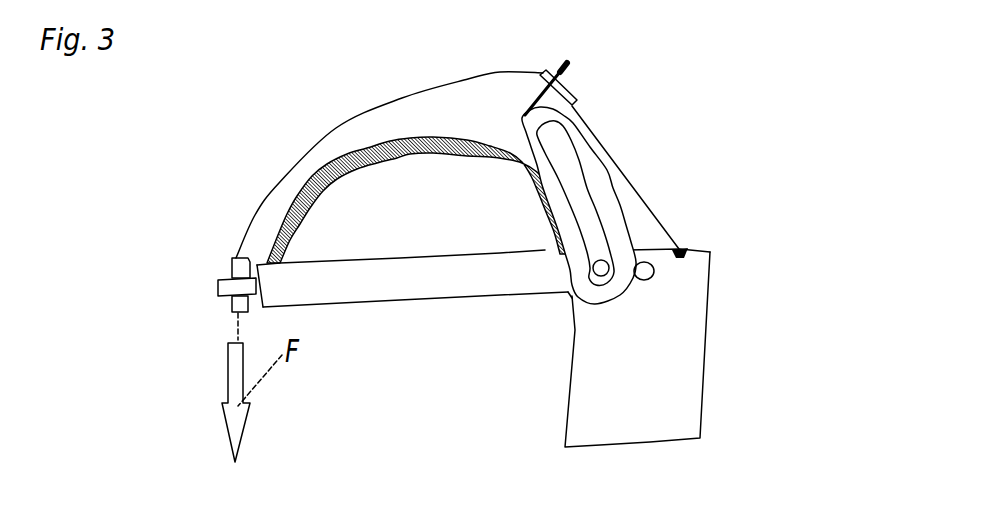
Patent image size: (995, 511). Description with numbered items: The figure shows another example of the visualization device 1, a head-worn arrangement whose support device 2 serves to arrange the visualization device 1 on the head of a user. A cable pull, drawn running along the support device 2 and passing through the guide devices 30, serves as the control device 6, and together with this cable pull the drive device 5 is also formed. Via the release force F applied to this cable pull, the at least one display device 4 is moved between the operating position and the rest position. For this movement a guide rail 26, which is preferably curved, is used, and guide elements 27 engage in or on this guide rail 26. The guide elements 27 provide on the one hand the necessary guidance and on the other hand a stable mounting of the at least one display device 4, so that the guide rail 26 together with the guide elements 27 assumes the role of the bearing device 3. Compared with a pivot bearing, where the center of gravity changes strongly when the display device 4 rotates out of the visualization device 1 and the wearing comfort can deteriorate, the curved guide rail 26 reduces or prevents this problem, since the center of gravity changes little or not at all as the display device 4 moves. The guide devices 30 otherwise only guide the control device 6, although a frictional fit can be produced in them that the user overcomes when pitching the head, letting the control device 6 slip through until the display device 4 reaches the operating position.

The visualization device 1 is at (230, 99).
The support device 2 is at (450, 157).
The bearing device 3 is at (553, 305).
The display device 4 is at (537, 388).
The drive device 5 is at (688, 250).
The control device 6 is at (393, 98).
The guide rail 26 is at (585, 158).
The guide elements 27 is at (601, 266).
The guide device 30 is at (557, 66).